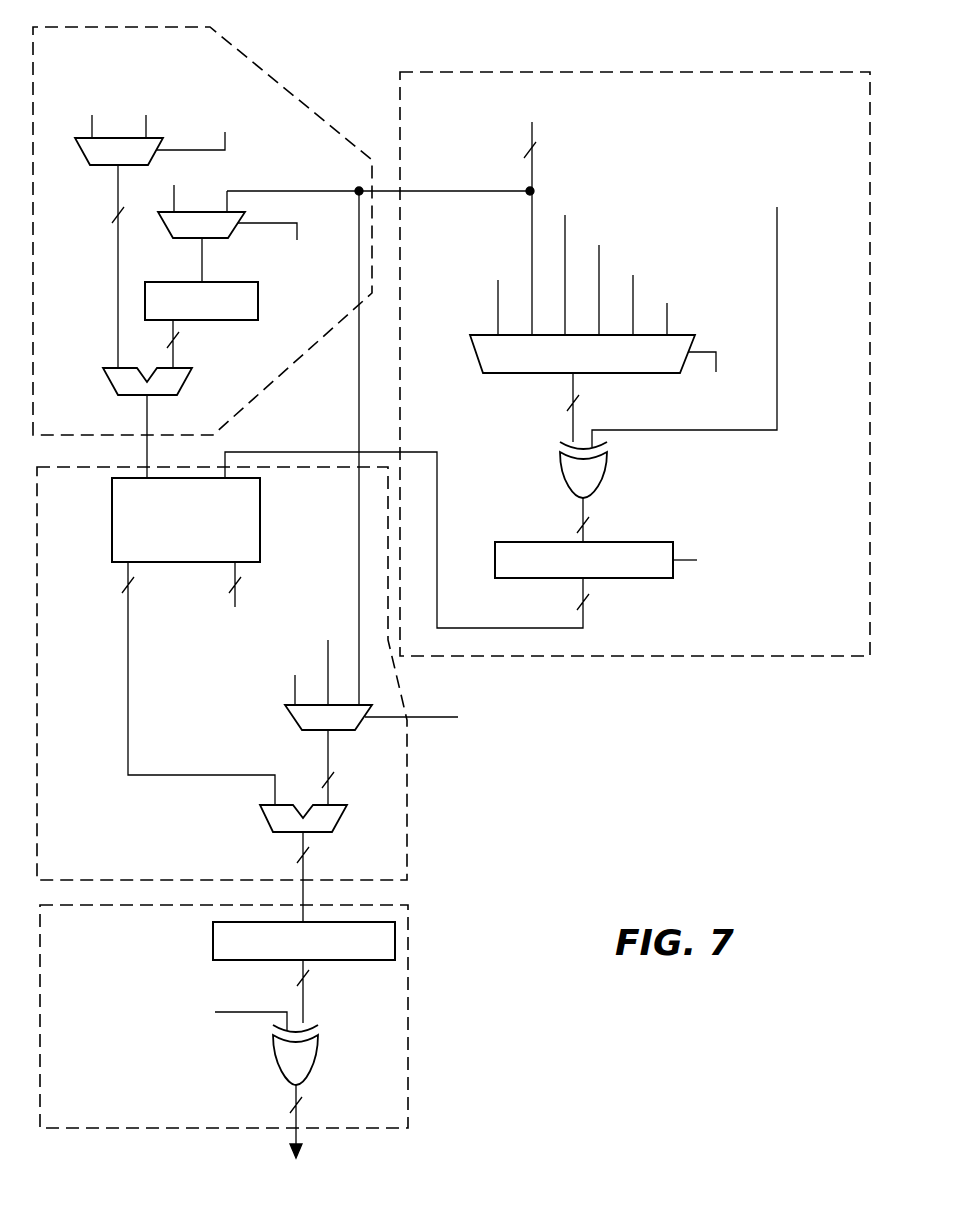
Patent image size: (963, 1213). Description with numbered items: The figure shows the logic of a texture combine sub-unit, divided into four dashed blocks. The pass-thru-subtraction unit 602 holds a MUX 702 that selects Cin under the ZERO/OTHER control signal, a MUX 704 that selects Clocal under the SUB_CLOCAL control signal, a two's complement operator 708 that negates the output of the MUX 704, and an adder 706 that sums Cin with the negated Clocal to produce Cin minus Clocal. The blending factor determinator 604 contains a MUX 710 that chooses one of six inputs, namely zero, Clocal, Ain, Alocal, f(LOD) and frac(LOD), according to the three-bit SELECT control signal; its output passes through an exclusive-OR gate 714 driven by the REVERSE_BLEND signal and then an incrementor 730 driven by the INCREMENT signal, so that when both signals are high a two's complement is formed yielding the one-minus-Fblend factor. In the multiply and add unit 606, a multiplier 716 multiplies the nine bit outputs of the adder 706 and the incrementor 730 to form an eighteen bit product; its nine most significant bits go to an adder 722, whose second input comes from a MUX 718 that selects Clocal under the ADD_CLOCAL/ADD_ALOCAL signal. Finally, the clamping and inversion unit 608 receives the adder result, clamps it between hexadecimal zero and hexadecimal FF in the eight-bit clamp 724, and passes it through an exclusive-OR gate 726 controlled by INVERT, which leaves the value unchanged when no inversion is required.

The pass-thru-subtraction unit 602 is at (252, 44).
The blending factor determinator 604 is at (722, 656).
The multiply and add unit 606 is at (407, 848).
The clamping and inversion unit 608 is at (409, 990).
The MUX 702 is at (106, 166).
The MUX 704 is at (192, 239).
The adder 706 is at (138, 396).
The two's complement operator 708 is at (207, 321).
The MUX 710 is at (540, 374).
The exclusive-OR gate 714 is at (606, 473).
The multiplier 716 is at (112, 537).
The MUX 718 is at (320, 731).
The adder 722 is at (285, 833).
The 8-bit clamp 724 is at (285, 961).
The exclusive-OR gate 726 is at (318, 1058).
The incrementor 730 is at (565, 579).